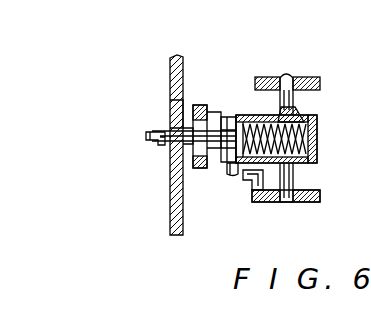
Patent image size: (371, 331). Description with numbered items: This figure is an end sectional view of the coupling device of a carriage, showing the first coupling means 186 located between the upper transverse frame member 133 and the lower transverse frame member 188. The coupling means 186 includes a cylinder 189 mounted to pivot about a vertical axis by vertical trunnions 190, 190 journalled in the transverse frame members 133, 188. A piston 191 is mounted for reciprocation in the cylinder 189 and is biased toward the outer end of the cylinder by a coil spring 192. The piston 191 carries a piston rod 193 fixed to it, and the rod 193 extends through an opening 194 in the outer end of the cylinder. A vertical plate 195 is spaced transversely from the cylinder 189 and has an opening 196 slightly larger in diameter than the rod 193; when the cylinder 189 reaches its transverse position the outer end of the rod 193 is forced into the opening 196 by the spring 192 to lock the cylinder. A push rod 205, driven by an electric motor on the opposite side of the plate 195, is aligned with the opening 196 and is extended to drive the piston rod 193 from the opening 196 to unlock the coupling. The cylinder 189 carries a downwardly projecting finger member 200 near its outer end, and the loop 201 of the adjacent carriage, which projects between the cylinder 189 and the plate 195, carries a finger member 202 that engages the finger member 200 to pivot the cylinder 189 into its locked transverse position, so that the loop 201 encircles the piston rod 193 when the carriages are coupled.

The transverse frame member 133 is at (302, 81).
The first coupling means 186 is at (304, 112).
The lower transverse frame member 188 is at (318, 196).
The cylinder 189 is at (318, 134).
The vertical trunnions 190 is at (298, 95).
The piston 191 is at (242, 114).
The coil spring 192 is at (318, 147).
The piston rod 193 is at (188, 130).
The opening 194 is at (222, 124).
The vertical plate 195 is at (175, 237).
The opening 196 is at (176, 124).
The finger member 200 is at (229, 178).
The loop 201 is at (198, 164).
The finger member 202 is at (257, 201).
The push rod 205 is at (157, 147).